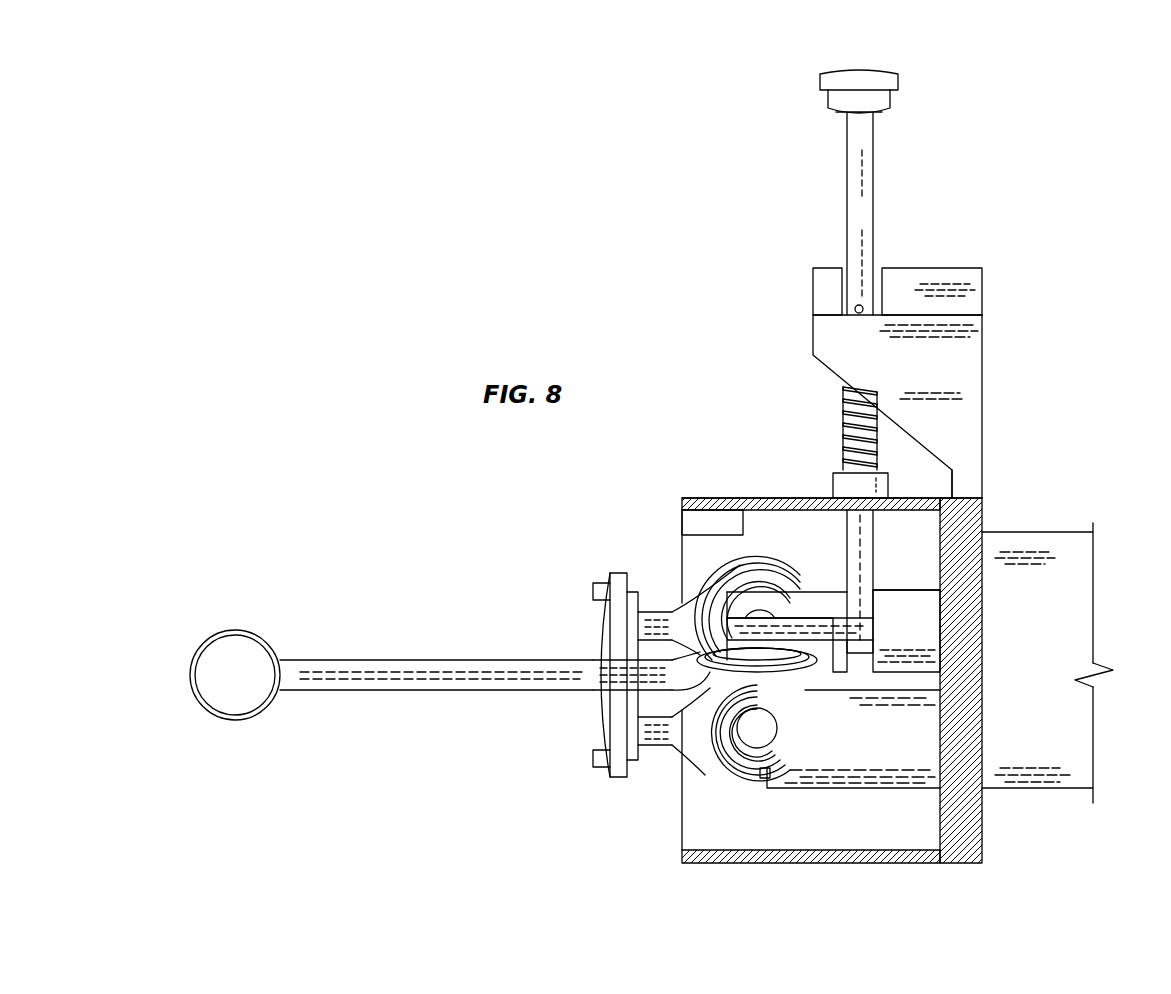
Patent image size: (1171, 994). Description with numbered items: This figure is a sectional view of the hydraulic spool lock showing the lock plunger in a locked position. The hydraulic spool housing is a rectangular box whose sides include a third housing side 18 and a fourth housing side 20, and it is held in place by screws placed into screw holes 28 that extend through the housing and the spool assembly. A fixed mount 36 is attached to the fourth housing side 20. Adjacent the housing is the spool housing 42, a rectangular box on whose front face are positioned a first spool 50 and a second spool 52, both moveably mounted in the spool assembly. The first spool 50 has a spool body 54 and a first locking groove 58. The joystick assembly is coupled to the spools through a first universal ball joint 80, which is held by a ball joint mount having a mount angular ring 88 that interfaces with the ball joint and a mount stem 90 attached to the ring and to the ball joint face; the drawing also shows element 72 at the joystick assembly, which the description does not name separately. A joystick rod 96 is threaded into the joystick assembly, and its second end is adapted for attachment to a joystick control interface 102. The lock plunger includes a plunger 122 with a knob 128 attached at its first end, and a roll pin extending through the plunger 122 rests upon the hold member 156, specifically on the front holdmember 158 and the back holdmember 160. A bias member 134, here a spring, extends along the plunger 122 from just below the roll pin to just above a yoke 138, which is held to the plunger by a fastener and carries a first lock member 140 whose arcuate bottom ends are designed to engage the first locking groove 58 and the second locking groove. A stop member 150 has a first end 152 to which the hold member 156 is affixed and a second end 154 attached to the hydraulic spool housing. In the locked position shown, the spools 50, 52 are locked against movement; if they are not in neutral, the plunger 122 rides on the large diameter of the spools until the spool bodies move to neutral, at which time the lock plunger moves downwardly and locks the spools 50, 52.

The third housing side 18 is at (735, 495).
The fourth housing side 20 is at (805, 866).
The screw holes 28 is at (705, 540).
The fixed mount 36 is at (830, 758).
The spool housing 42 is at (1093, 704).
The first spool 50 is at (845, 580).
The second spool 52 is at (830, 585).
The spool body 54 is at (882, 600).
The first locking groove 58 is at (872, 580).
The flange 72 is at (620, 770).
The first universal ball joint 80 is at (765, 780).
The mount angular ring 88 is at (693, 755).
The mount stem 90 is at (655, 745).
The joystick rod 96 is at (435, 688).
The joystick control interface 102 is at (240, 640).
The plunger 122 is at (862, 190).
The knob 128 is at (855, 68).
The bias member 134 is at (843, 412).
The yoke 138 is at (848, 485).
The first lock member 140 is at (870, 540).
The stop member 150 is at (970, 416).
The stop member first end 152 is at (970, 370).
The stop member second end 154 is at (982, 478).
The hold member 156 is at (918, 255).
The front holdmember 158 is at (822, 302).
The back holdmember 160 is at (980, 300).